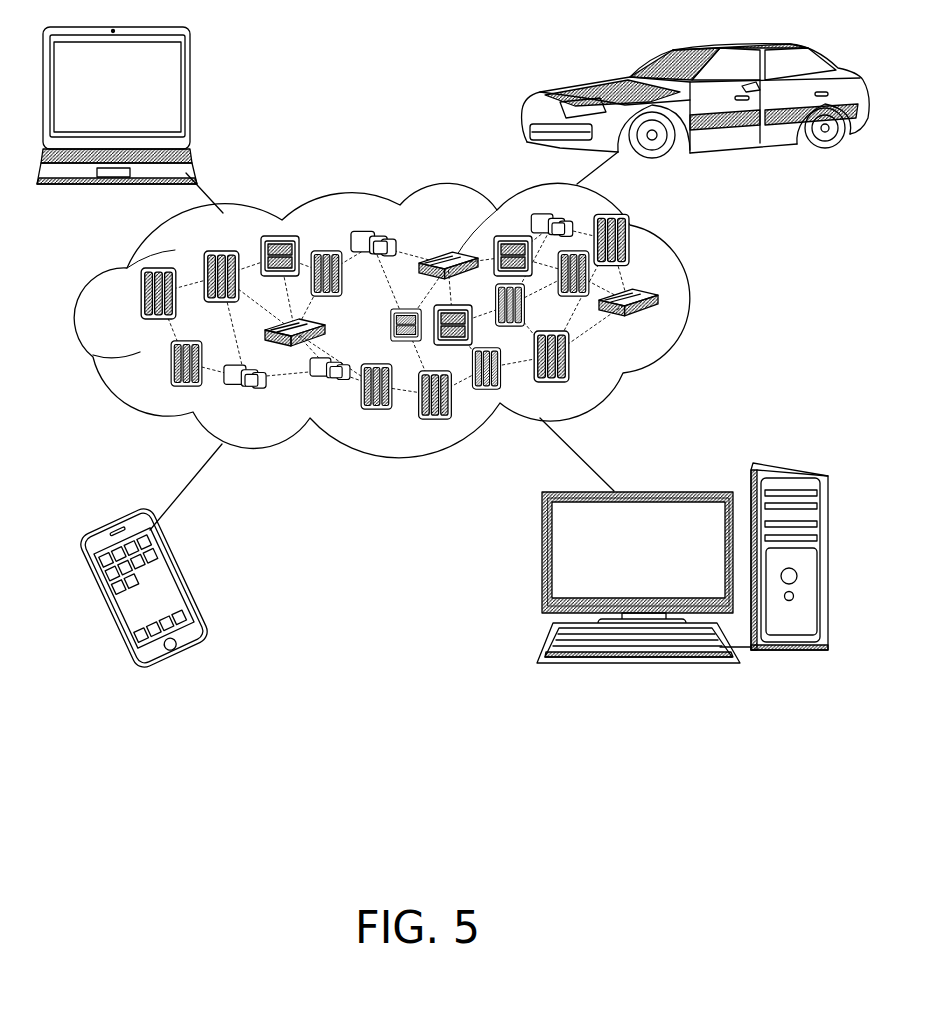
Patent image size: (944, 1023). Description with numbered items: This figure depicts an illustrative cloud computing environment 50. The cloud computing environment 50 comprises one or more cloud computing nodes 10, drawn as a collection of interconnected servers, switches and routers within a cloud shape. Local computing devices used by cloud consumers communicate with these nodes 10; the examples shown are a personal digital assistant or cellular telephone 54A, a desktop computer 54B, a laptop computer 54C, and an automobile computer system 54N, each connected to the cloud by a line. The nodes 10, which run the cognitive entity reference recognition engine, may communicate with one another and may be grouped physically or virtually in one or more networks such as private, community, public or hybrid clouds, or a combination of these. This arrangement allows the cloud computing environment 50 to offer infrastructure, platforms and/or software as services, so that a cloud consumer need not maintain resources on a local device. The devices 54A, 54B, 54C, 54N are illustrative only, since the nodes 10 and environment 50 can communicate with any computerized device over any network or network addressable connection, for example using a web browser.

The cloud computing node 10 is at (666, 320).
The cloud computing environment 50 is at (417, 320).
The personal digital assistant or cellular telephone 54A is at (163, 580).
The desktop computer 54B is at (698, 490).
The laptop computer 54C is at (172, 105).
The automobile computer system 54N is at (527, 112).